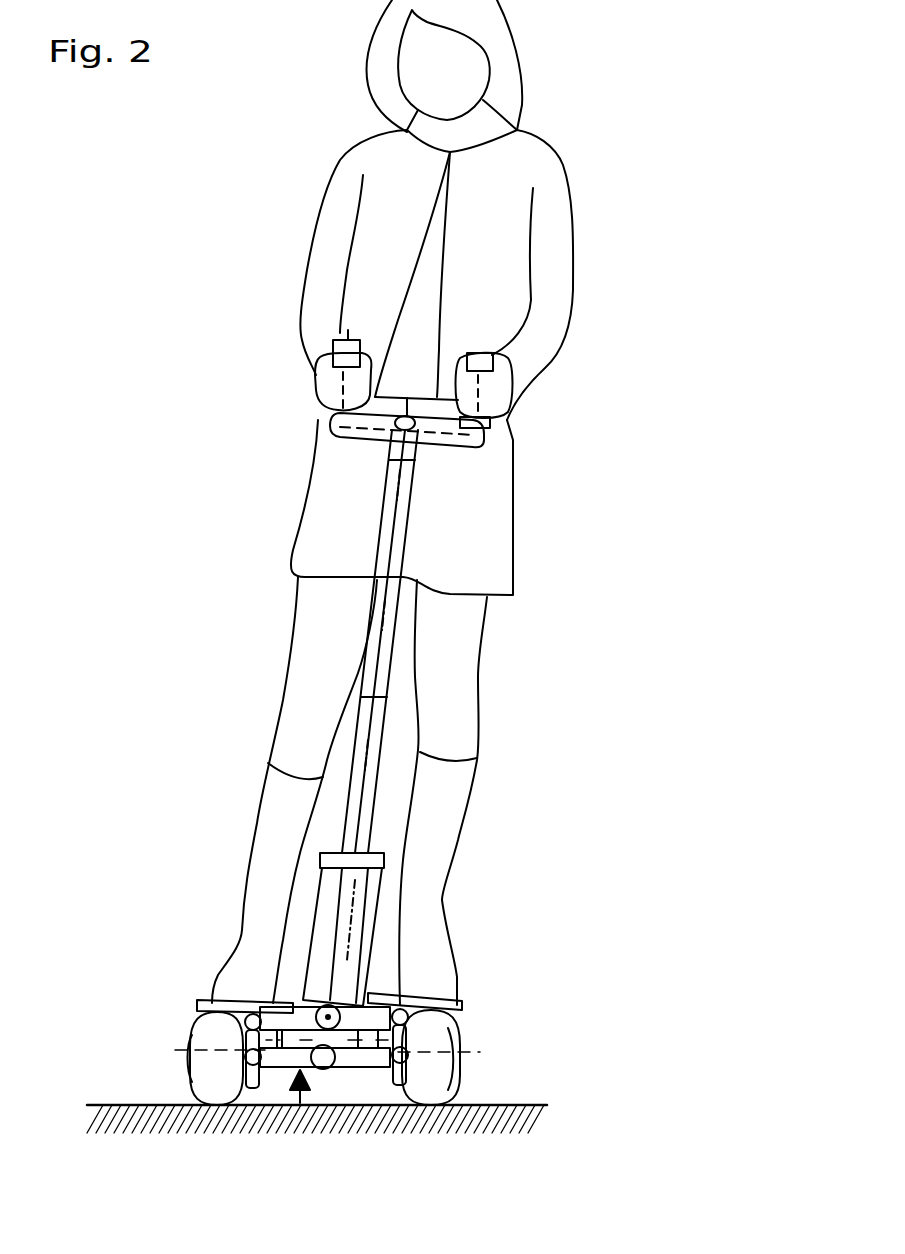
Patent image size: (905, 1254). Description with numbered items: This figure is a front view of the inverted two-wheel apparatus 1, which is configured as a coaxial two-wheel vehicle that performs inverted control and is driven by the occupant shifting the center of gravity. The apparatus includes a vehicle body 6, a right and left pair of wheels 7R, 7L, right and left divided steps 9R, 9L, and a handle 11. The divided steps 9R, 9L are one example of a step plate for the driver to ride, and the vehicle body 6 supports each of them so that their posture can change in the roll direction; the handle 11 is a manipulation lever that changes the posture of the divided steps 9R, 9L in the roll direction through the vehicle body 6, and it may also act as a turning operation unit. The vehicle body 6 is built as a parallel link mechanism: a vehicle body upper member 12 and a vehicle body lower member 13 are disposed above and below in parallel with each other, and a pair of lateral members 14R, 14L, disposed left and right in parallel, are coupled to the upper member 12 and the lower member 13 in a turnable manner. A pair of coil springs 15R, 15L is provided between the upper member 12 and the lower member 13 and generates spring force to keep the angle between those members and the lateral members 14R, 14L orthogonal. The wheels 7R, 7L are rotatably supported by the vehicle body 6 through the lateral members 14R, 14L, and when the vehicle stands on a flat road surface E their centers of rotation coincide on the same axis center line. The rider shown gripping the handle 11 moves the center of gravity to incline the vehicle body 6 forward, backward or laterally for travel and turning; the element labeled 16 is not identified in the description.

The inverted two-wheel apparatus 1 is at (131, 387).
The vehicle body 6 is at (299, 1106).
The right wheel 7R is at (203, 1083).
The left wheel 7L is at (447, 1045).
The right divided step 9R is at (195, 1000).
The left divided step 9L is at (463, 1004).
The handle 11 is at (378, 722).
The vehicle body upper member 12 is at (266, 1010).
The vehicle body lower member 13 is at (360, 1040).
The right lateral member 14R is at (250, 1090).
The left lateral member 14L is at (395, 1083).
The right coil spring 15R is at (292, 1045).
The left coil spring 15L is at (392, 1068).
The grip 16 is at (490, 362).
The flat road surface E is at (538, 1105).